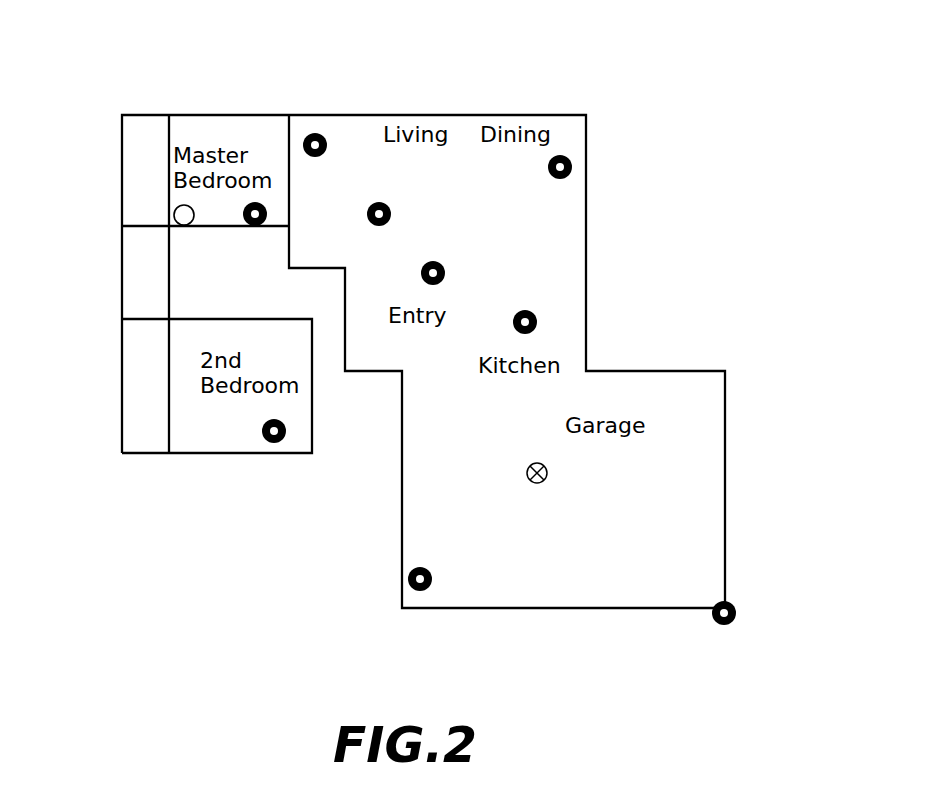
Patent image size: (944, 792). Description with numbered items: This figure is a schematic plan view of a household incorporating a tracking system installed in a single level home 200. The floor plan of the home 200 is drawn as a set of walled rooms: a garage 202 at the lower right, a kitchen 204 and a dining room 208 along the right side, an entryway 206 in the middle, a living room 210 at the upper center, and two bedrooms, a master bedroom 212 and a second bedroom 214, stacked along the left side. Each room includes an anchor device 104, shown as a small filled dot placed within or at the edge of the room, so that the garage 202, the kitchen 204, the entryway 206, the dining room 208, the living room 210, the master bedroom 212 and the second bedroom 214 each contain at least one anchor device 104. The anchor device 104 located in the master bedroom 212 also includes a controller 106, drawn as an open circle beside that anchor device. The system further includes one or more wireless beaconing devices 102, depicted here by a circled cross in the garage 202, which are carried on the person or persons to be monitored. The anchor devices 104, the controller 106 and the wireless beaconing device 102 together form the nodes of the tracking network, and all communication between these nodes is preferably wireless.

The wireless beaconing device 102 is at (547, 475).
The anchor device 104 is at (548, 167).
The controller 106 is at (172, 213).
The home 200 is at (841, 175).
The garage 202 is at (685, 488).
The kitchen 204 is at (547, 317).
The entryway 206 is at (427, 358).
The dining room 208 is at (548, 212).
The living room 210 is at (423, 133).
The master bedroom 212 is at (218, 133).
The second bedroom 214 is at (225, 440).